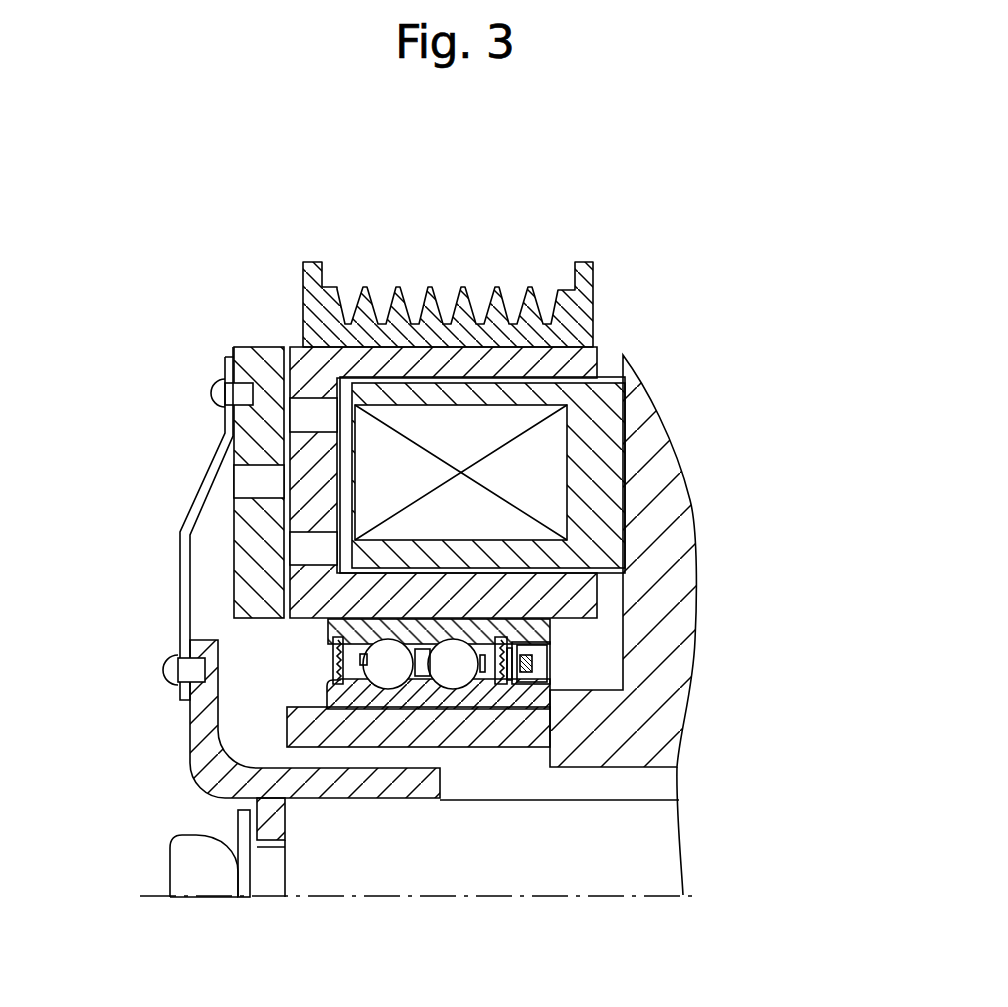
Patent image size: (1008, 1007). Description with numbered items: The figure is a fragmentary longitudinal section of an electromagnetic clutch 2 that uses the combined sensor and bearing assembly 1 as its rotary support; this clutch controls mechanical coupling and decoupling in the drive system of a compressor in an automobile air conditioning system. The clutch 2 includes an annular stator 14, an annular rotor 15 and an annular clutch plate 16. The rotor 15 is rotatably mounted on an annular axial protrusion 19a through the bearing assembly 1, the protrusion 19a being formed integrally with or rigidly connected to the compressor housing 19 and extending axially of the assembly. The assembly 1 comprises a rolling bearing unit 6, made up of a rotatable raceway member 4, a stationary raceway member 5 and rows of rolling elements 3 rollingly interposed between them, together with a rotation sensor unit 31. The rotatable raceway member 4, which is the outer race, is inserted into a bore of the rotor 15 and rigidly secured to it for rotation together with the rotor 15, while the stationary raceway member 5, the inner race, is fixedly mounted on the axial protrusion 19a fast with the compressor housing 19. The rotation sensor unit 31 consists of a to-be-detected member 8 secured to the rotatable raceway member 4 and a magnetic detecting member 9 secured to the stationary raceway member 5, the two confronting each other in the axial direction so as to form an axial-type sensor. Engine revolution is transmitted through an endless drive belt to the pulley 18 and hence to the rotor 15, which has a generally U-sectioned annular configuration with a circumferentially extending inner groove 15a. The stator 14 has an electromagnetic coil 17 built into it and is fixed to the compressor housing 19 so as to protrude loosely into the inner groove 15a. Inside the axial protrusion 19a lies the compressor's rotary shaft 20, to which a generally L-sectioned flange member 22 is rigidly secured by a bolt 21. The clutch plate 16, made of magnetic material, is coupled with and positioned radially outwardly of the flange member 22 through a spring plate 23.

The combined sensor and bearing assembly 1 is at (499, 781).
The electromagnetic clutch 2 is at (248, 333).
The rolling elements 3 is at (450, 676).
The rotatable raceway member 4 is at (488, 614).
The stationary raceway member 5 is at (503, 695).
The rolling bearing unit 6 is at (355, 712).
The to-be-detected member 8 is at (540, 717).
The magnetic detecting member 9 is at (550, 663).
The stator 14 is at (600, 428).
The rotor 15 is at (577, 367).
The inner groove 15a is at (422, 378).
The clutch plate 16 is at (260, 431).
The electromagnetic coil 17 is at (537, 478).
The pulley 18 is at (578, 262).
The compressor housing 19 is at (678, 581).
The annular axial protrusion 19a is at (473, 730).
The rotary shaft 20 is at (650, 840).
The bolt 21 is at (185, 855).
The flange member 22 is at (200, 744).
The spring plate 23 is at (185, 572).
The rotation sensor unit 31 is at (711, 687).